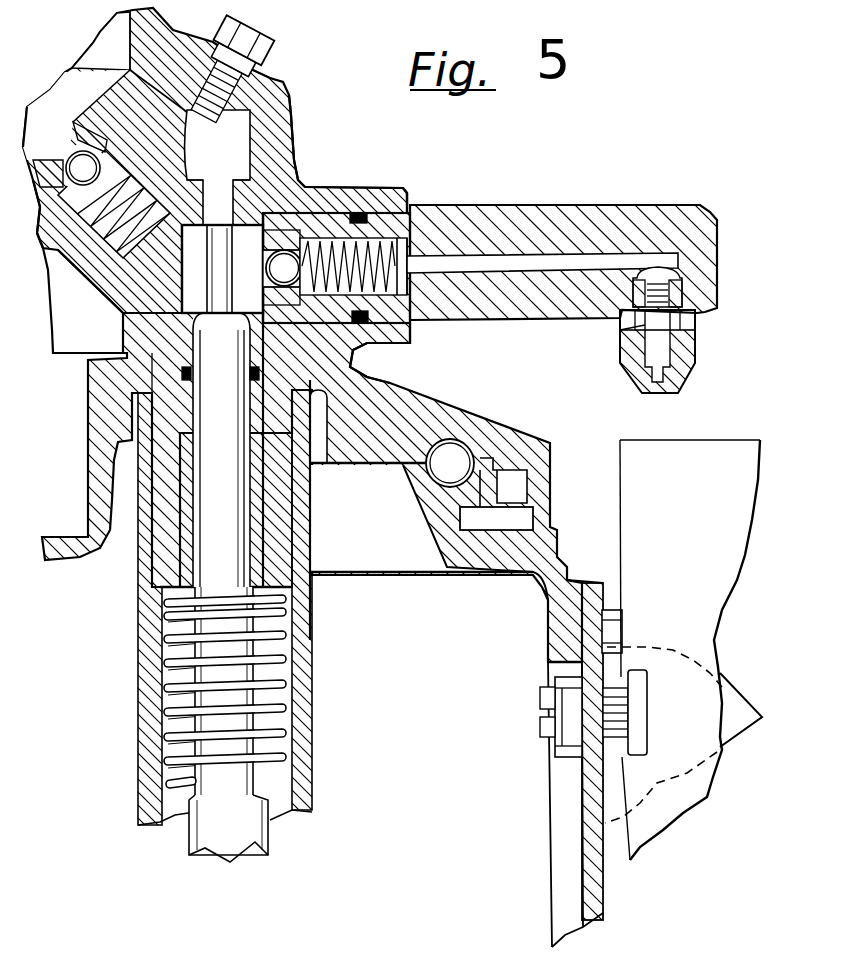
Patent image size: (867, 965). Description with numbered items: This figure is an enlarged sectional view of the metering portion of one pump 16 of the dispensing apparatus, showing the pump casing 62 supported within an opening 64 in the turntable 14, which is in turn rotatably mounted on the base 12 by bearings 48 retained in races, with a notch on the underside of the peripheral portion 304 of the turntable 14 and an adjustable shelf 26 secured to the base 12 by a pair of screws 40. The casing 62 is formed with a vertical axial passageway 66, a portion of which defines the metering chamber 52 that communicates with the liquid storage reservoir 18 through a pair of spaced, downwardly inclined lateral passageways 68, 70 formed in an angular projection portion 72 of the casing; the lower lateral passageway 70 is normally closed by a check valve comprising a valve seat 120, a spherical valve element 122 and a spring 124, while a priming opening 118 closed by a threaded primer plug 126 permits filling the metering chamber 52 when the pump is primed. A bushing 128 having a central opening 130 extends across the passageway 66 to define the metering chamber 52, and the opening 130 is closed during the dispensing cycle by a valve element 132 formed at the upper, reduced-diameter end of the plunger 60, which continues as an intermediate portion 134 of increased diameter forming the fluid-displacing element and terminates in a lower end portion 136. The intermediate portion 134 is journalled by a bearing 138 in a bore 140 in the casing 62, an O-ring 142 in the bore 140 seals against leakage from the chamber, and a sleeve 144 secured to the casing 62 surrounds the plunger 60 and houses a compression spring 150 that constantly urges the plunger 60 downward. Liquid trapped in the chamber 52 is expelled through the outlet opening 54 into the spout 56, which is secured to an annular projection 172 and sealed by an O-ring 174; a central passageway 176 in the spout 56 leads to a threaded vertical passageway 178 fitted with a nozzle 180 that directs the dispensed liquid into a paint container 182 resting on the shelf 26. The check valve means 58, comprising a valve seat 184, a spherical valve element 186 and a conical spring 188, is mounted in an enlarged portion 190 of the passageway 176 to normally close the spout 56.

The base 12 is at (606, 895).
The turntable 14 is at (462, 410).
The pump 16 is at (380, 173).
The liquid storage reservoir 18 is at (103, 45).
The adjustable shelf 26 is at (738, 712).
The screws 40 is at (648, 722).
The bearings 48 is at (450, 463).
The metering chamber 52 is at (195, 306).
The outlet opening 54 is at (318, 210).
The spout 56 is at (525, 210).
The check valve means 58 is at (433, 575).
The plunger 60 is at (266, 833).
The pump casing 62 is at (312, 582).
The opening 64 is at (317, 387).
The vertical axial passageway 66 is at (250, 140).
The lateral passageway 68 is at (146, 102).
The lateral passageway 70 is at (46, 213).
The angular projection portion 72 is at (83, 300).
The priming opening 118 is at (262, 83).
The valve seat 120 is at (73, 124).
The spherical valve element 122 is at (83, 168).
The spring 124 is at (128, 184).
The primer plug 126 is at (246, 42).
The bushing 128 is at (247, 226).
The central opening 130 is at (214, 180).
The valve element 132 is at (218, 266).
The intermediate portion 134 is at (221, 450).
The lower end portion 136 is at (202, 846).
The bearing 138 is at (300, 526).
The bore 140 is at (302, 551).
The O-ring 142 is at (262, 369).
The sleeve 144 is at (311, 712).
The compression spring 150 is at (272, 742).
The annular projection 172 is at (408, 197).
The O-ring 174 is at (365, 324).
The central passageway 176 is at (575, 258).
The threaded vertical passageway 178 is at (684, 294).
The nozzle 180 is at (684, 377).
The paint container 182 is at (665, 441).
The valve seat 184 is at (282, 305).
The spherical valve element 186 is at (284, 268).
The conical spring 188 is at (398, 246).
The enlarged portion 190 is at (398, 294).
The peripheral portion 304 is at (551, 480).